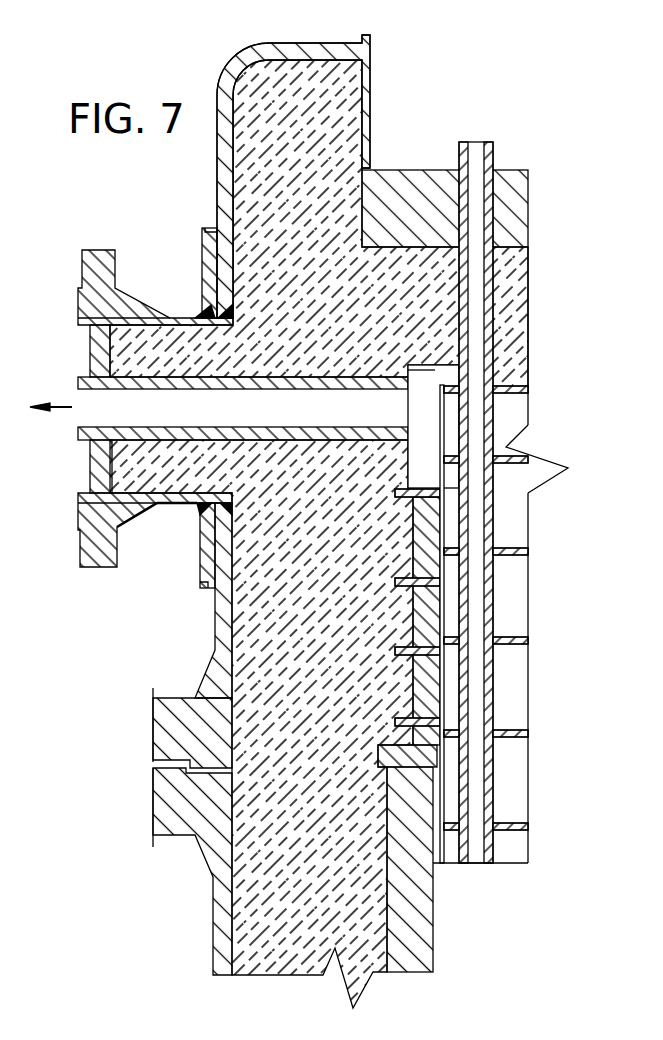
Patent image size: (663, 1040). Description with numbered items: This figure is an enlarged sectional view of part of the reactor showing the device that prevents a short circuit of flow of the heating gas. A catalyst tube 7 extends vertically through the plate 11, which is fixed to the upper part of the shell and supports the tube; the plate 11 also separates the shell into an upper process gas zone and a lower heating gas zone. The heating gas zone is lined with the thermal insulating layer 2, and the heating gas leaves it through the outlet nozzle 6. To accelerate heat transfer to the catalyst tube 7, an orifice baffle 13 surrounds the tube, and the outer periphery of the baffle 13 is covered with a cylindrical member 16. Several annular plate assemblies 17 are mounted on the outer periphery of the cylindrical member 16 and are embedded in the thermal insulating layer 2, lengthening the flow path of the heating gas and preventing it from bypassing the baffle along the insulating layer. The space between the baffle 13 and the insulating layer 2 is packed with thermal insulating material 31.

The thermal insulating layer 2 is at (253, 574).
The outlet nozzle for heating gas 6 is at (80, 395).
The catalyst tube 7 is at (477, 410).
The plate 11 is at (400, 182).
The orifice baffle 13 is at (467, 534).
The cylindrical member 16 is at (444, 783).
The annular plate assembly 17 is at (443, 703).
The thermal insulating material 31 is at (433, 617).